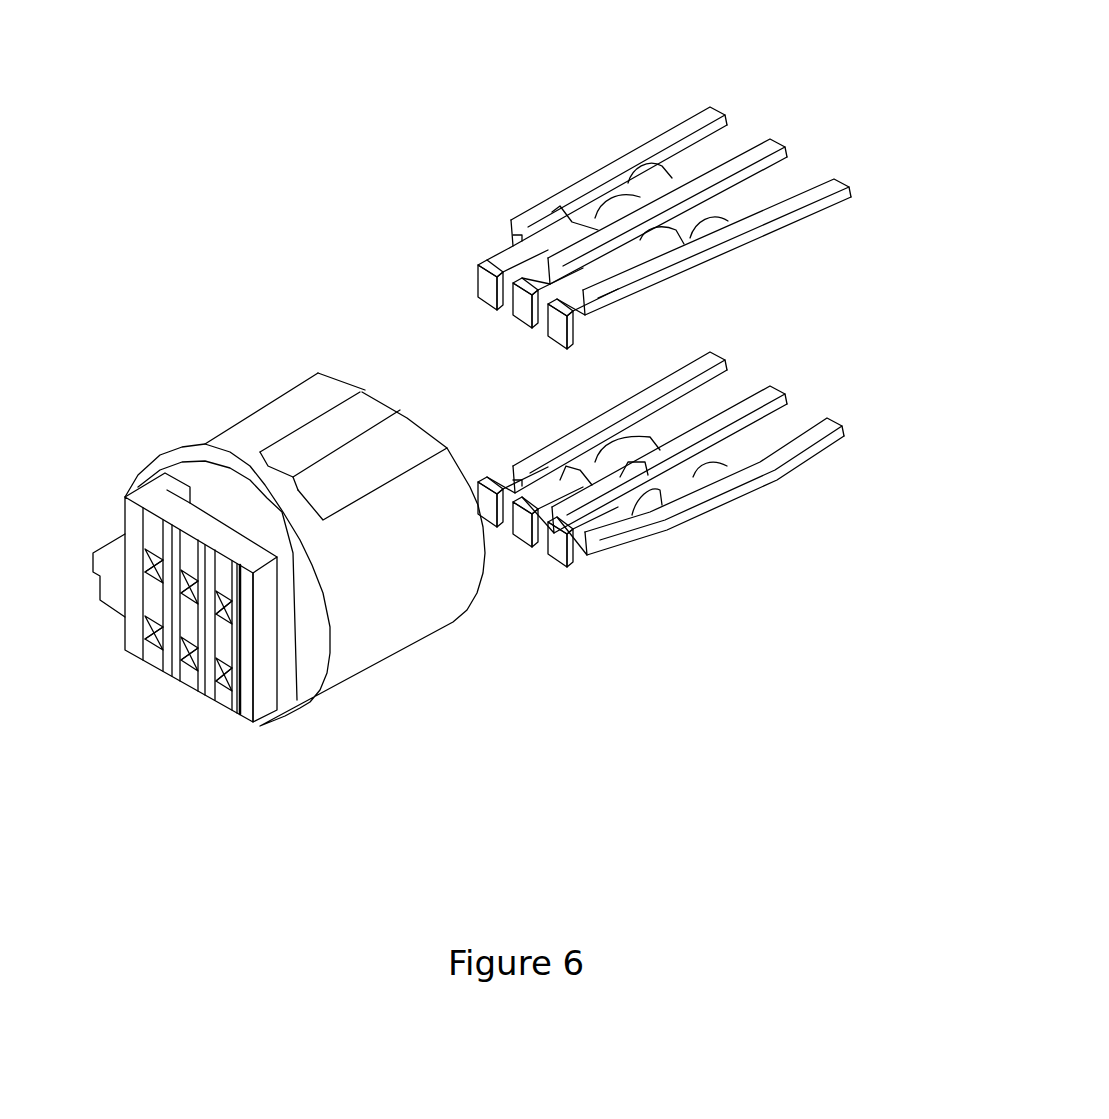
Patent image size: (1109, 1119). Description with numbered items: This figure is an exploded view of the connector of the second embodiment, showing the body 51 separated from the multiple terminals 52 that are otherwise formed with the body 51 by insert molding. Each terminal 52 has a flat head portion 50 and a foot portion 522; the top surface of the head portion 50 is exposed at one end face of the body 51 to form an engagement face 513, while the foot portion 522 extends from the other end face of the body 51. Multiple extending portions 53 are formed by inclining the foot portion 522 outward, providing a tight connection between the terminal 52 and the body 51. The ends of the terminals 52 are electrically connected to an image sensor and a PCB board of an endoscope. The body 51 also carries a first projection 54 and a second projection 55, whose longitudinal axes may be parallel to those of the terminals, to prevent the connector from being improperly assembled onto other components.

The head portion 50 is at (661, 556).
The body 51 is at (271, 575).
The terminal 52 is at (699, 337).
The foot portion 522 is at (697, 337).
The extending portion 53 is at (734, 211).
The first projection 54 is at (316, 412).
The second projection 55 is at (75, 593).
The engagement face 513 is at (213, 644).